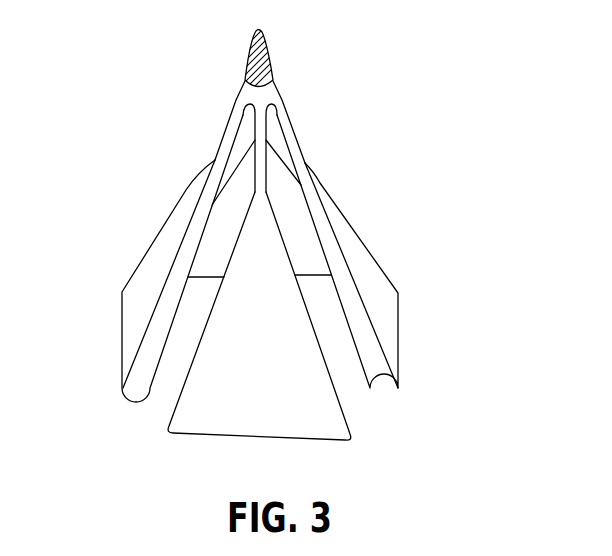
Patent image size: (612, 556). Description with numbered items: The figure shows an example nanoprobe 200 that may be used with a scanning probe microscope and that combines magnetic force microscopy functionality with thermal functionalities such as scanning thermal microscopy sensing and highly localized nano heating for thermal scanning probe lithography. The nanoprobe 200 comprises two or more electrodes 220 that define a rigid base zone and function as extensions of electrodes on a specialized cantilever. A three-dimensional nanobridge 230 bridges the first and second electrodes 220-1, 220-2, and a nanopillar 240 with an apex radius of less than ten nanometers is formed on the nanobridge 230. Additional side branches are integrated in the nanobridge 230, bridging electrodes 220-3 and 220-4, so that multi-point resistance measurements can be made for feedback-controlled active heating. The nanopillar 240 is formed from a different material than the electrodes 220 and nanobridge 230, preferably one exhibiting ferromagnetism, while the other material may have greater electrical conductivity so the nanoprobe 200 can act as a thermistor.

The nanoprobe 200 is at (162, 116).
The electrodes 220 is at (473, 142).
The first electrode 220-1 is at (153, 266).
The second electrode 220-2 is at (373, 268).
The electrode 220-3 is at (325, 418).
The electrode 220-4 is at (292, 222).
The 3D nanobridge 230 is at (273, 100).
The nanopillar 240 is at (268, 53).